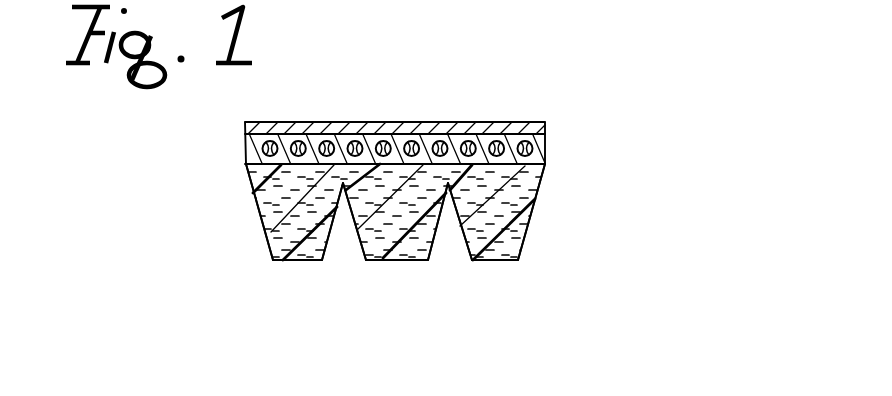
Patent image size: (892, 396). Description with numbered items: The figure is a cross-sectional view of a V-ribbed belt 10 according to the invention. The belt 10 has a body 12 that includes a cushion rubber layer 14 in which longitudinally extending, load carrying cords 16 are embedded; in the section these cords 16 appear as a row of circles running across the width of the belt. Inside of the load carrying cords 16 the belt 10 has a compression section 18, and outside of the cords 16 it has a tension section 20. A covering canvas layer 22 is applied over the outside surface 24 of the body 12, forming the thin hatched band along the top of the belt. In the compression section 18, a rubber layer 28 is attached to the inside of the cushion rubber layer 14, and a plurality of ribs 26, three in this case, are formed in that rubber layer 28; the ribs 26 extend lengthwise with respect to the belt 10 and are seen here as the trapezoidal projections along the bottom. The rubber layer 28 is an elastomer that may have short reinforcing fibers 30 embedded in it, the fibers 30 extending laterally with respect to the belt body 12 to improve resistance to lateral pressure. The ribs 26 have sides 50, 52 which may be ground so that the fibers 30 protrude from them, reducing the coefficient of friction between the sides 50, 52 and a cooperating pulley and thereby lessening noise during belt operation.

The V-ribbed belt 10 is at (626, 97).
The body 12 is at (549, 173).
The cushion rubber layer 14 is at (245, 145).
The load carrying cords 16 is at (341, 133).
The compression section 18 is at (261, 240).
The tension section 20 is at (549, 126).
The covering canvas layer 22 is at (460, 122).
The outside surface 24 is at (407, 134).
The ribs 26 is at (298, 261).
The rubber layer 28 is at (529, 227).
The reinforcing fibers 30 is at (386, 231).
The side 50 is at (537, 198).
The side 52 is at (256, 198).